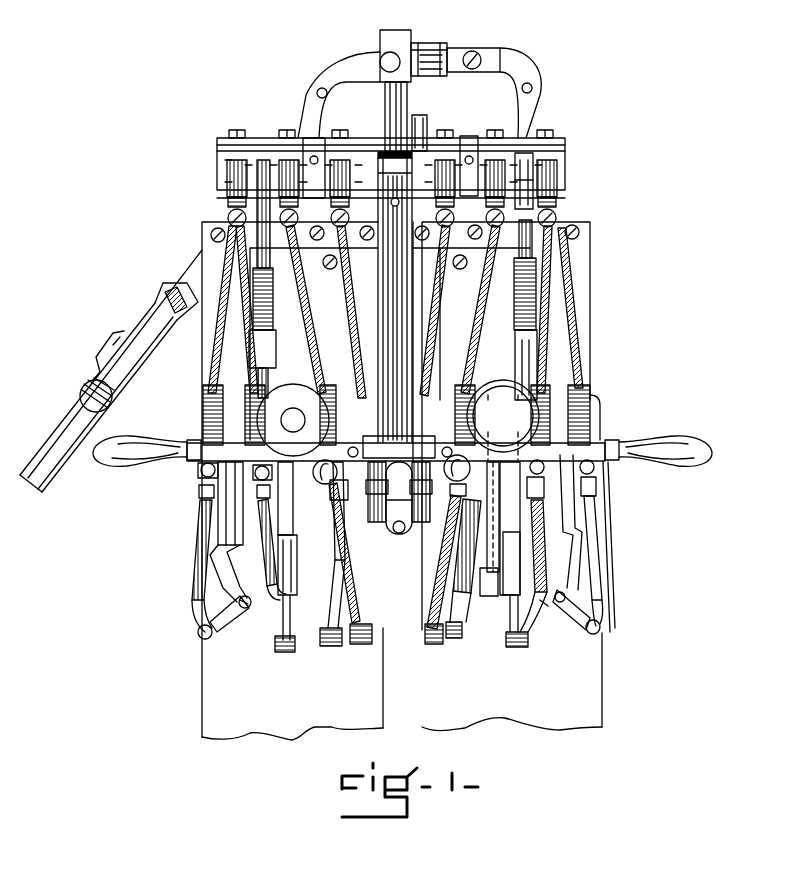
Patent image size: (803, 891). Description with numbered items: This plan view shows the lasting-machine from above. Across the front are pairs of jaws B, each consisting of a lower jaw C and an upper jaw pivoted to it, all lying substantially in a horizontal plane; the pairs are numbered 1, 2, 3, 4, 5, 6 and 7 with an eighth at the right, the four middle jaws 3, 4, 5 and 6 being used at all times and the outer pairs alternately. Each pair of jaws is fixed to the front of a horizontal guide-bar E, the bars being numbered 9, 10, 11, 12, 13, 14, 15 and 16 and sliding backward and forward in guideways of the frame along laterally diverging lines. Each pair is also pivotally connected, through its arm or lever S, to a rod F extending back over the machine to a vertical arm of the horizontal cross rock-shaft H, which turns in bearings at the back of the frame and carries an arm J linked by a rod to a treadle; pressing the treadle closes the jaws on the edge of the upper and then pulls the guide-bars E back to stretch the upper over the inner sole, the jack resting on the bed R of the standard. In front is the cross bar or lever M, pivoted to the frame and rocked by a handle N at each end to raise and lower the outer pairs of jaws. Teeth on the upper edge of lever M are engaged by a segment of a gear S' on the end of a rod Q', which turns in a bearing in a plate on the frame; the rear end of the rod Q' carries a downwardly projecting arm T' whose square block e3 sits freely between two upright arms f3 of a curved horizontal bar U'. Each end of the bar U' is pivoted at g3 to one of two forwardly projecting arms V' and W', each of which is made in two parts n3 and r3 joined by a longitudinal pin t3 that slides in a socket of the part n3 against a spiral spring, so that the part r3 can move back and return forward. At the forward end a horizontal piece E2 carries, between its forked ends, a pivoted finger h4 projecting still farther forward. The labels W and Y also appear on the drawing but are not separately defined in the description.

The arm T' is at (413, 44).
The square plate or block e3 is at (445, 48).
The upright arms f3 is at (472, 50).
The curved horizontal bar U' is at (419, 81).
The pivots g3 is at (317, 93).
The rod Q' is at (382, 308).
The arm J is at (420, 122).
The arm W' is at (549, 151).
The horizontal cross rock-shaft H is at (217, 157).
The lower jaw C is at (286, 160).
The bed R is at (402, 481).
The rod F is at (308, 340).
The segment of a gear S' is at (357, 410).
The wheel W is at (503, 420).
The cross horizontal bar M is at (207, 455).
The handle N is at (124, 468).
The horizontal bar E is at (222, 518).
The guide-bar 9 is at (245, 505).
The guide-bar 10 is at (292, 516).
The guide-bar 11 is at (295, 505).
The guide-bar 12 is at (392, 520).
The guide-bar 13 is at (452, 510).
The guide-bar 14 is at (490, 488).
The guide-bar 15 is at (530, 512).
The guide-bar 16 is at (574, 508).
The pairs of jaws B is at (236, 610).
The arm or lever S is at (386, 617).
The pair of jaws 1 is at (246, 606).
The pair of jaws 2 is at (290, 616).
The pair of jaws 3 is at (331, 623).
The pair of jaws 4 is at (361, 617).
The pair of jaws 5 is at (434, 617).
The pair of jaws 6 is at (457, 627).
The pair of jaws 7 is at (540, 598).
The foot Y is at (512, 623).
The finger h4 is at (492, 626).
The arm V' is at (115, 364).
The horizontal forwardly-extending piece E2 is at (84, 392).
The arm part n3 is at (166, 284).
The longitudinal projecting pin t3 is at (184, 318).
The arm part r3 is at (120, 352).